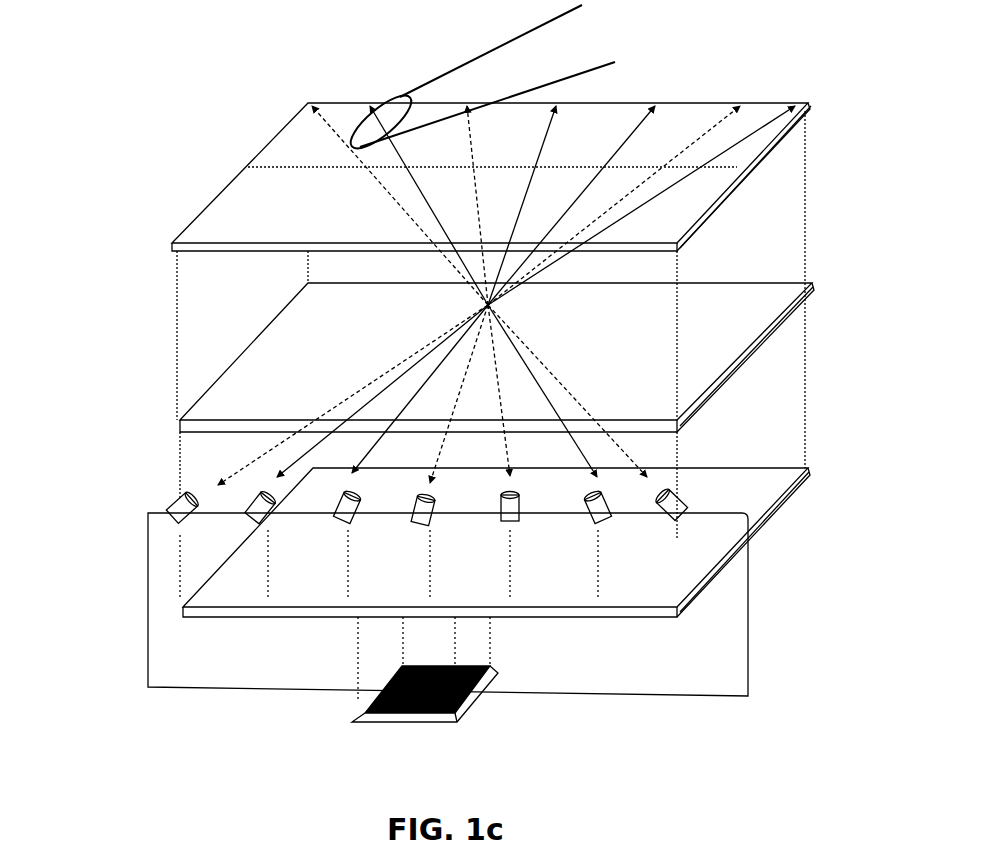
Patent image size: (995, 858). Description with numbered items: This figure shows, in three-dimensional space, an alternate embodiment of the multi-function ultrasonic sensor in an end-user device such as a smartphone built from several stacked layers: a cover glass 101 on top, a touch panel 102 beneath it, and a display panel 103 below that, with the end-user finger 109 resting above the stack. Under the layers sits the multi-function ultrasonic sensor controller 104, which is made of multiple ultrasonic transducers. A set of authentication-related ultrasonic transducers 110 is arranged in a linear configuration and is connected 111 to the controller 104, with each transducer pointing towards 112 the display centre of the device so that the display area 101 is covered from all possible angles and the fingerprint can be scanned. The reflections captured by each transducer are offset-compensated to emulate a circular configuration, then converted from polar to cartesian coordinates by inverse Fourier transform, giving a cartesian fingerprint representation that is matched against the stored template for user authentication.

The cover glass 101 is at (176, 228).
The touch panel 102 is at (182, 405).
The display panel 103 is at (180, 593).
The multi-function ultrasonic sensor controller 104 is at (378, 690).
The end-user finger 109 is at (450, 63).
The authentication-related ultrasonic transducers 110 is at (176, 512).
The connection 111 is at (144, 662).
The pointing direction 112 is at (398, 372).